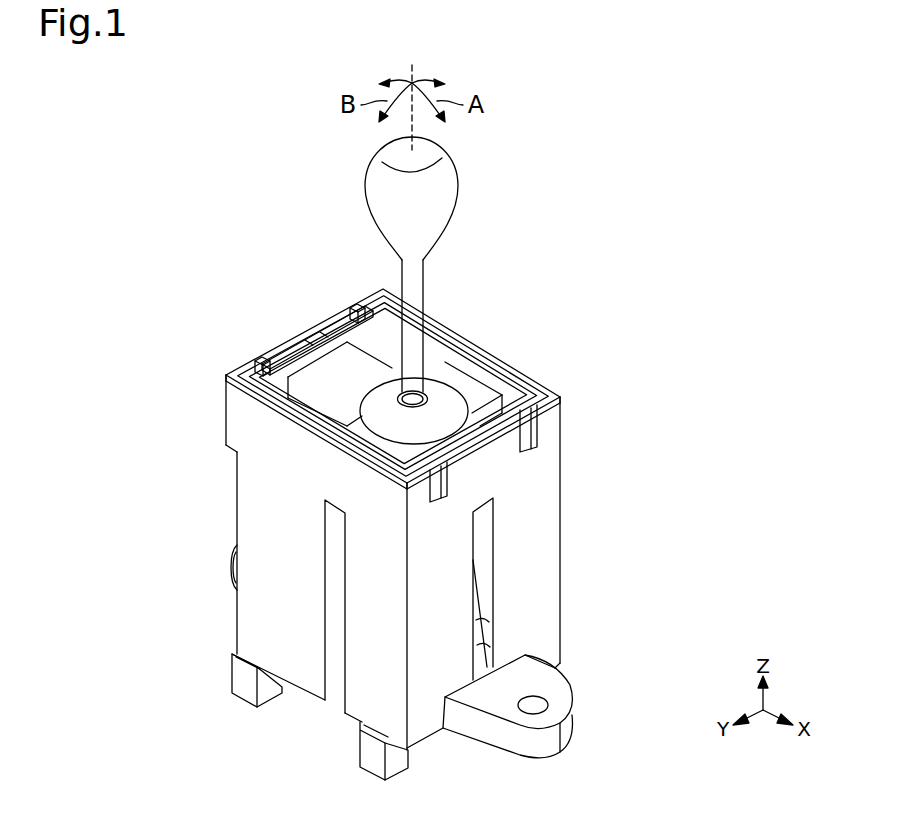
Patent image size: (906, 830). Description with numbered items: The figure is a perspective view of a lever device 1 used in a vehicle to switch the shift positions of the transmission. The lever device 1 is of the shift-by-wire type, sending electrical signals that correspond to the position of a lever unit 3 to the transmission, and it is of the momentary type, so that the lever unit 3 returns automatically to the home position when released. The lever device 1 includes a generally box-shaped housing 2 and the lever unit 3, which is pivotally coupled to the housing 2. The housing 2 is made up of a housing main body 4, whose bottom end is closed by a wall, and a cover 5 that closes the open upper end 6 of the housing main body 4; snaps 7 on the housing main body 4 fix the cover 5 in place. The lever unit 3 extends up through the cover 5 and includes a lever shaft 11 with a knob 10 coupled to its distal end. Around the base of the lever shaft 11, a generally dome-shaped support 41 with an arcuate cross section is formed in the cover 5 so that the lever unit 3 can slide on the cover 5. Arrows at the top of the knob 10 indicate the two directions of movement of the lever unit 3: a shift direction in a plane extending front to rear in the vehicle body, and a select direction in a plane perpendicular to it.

The lever device 1 is at (160, 166).
The housing 2 is at (155, 276).
The lever unit 3 is at (490, 192).
The housing main body 4 is at (225, 415).
The cover 5 is at (270, 355).
The open upper end 6 is at (314, 347).
The snaps 7 is at (260, 360).
The knob 10 is at (440, 199).
The lever shaft 11 is at (428, 283).
The support 41 is at (447, 397).